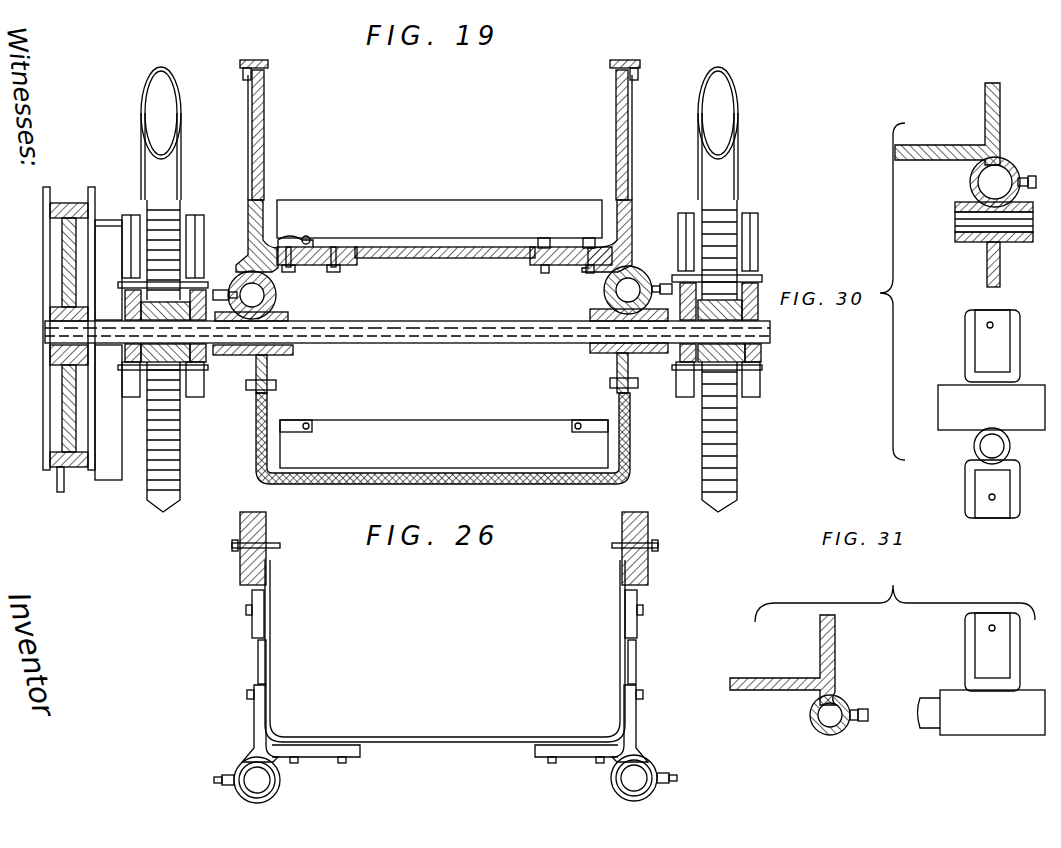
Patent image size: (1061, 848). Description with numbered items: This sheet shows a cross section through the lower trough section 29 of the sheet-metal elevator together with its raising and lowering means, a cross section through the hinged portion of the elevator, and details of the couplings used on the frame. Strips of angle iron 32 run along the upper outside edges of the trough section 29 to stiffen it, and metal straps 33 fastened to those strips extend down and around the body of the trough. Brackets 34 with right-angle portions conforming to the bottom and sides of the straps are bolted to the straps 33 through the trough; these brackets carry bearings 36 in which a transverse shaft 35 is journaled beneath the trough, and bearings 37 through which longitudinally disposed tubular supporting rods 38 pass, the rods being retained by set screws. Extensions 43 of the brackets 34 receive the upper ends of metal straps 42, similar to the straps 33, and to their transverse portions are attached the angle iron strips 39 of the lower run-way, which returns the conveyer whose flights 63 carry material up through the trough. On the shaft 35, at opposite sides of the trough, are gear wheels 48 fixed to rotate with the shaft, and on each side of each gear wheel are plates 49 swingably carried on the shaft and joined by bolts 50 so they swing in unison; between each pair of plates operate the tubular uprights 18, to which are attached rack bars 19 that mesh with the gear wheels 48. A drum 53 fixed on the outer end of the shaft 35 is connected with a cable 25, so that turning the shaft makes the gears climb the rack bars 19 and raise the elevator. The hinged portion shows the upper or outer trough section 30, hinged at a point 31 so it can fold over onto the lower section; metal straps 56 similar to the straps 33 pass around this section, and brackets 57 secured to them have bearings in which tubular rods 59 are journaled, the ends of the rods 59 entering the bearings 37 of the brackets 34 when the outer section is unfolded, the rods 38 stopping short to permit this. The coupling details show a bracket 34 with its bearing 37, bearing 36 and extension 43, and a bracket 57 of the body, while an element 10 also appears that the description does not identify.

In FIG. 19, the worm shaft 10 is at (737, 440).
In FIG. 19, the tubular uprights 18 is at (150, 148).
In FIG. 19, the rack bars 19 is at (170, 455).
In FIG. 19, the cable 25 is at (65, 482).
In FIG. 19, the lower trough section 29 is at (266, 142).
In FIG. 26, the upper trough section 30 is at (275, 612).
In FIG. 26, the hinge point 31 is at (240, 548).
In FIG. 19, the angle iron strips 32 is at (258, 50).
In FIG. 19, the metal straps 33 is at (252, 125).
In FIG. 19, the brackets 34 is at (248, 258).
In FIG. 30, the brackets 34 is at (957, 232).
In FIG. 19, the transverse shaft 35 is at (462, 302).
In FIG. 19, the bearings 36 is at (292, 314).
In FIG. 30, the bearings 36 is at (958, 232).
In FIG. 19, the bearings 37 is at (277, 298).
In FIG. 30, the bearings 37 is at (972, 190).
In FIG. 19, the tubular supporting rods 38 is at (262, 322).
In FIG. 19, the angle iron strips 39 is at (280, 478).
In FIG. 19, the metal straps 42 is at (258, 432).
In FIG. 19, the extensions 43 is at (257, 368).
In FIG. 30, the extensions 43 is at (987, 272).
In FIG. 19, the gear wheels 48 is at (140, 383).
In FIG. 19, the plates 49 is at (128, 215).
In FIG. 19, the bolts 50 is at (120, 300).
In FIG. 19, the drum 53 is at (52, 375).
In FIG. 26, the metal straps 56 is at (275, 668).
In FIG. 26, the brackets 57 is at (262, 715).
In FIG. 31, the brackets 57 is at (887, 674).
In FIG. 26, the tubular rods 59 is at (272, 772).
In FIG. 19, the flights 63 is at (444, 334).